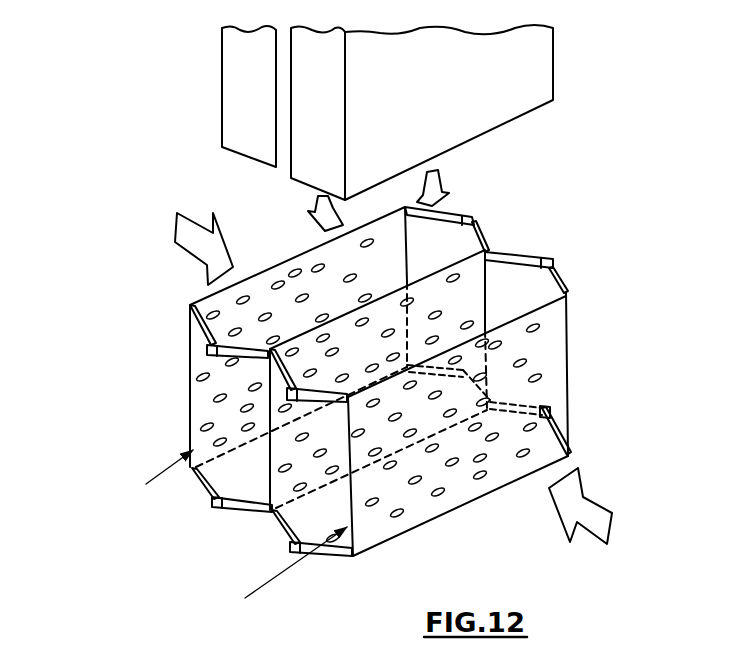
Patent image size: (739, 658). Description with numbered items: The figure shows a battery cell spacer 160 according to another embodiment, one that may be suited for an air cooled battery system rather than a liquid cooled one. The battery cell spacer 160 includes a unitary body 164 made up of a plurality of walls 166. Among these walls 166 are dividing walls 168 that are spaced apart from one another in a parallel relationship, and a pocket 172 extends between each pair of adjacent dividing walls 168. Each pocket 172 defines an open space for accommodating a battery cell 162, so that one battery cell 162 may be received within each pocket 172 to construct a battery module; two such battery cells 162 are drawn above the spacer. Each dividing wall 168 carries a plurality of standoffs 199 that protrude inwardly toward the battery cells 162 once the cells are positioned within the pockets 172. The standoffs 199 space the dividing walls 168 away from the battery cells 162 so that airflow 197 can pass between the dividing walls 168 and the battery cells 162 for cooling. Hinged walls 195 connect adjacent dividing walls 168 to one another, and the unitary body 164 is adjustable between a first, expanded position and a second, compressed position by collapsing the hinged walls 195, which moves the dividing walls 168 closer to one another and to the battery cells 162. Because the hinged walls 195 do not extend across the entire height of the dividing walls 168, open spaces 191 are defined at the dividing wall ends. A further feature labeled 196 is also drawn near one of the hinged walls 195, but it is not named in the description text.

The battery cell spacer 160 is at (152, 128).
The battery cell 162 is at (269, 88).
The unitary body 164 is at (588, 338).
The walls 166 is at (389, 525).
The dividing wall 168 is at (378, 258).
The pocket 172 is at (418, 212).
The open spaces 191 is at (432, 257).
The hinged wall 195 is at (188, 330).
The bend portion 196 is at (194, 486).
The airflow 197 is at (146, 484).
The standoffs 199 is at (302, 296).